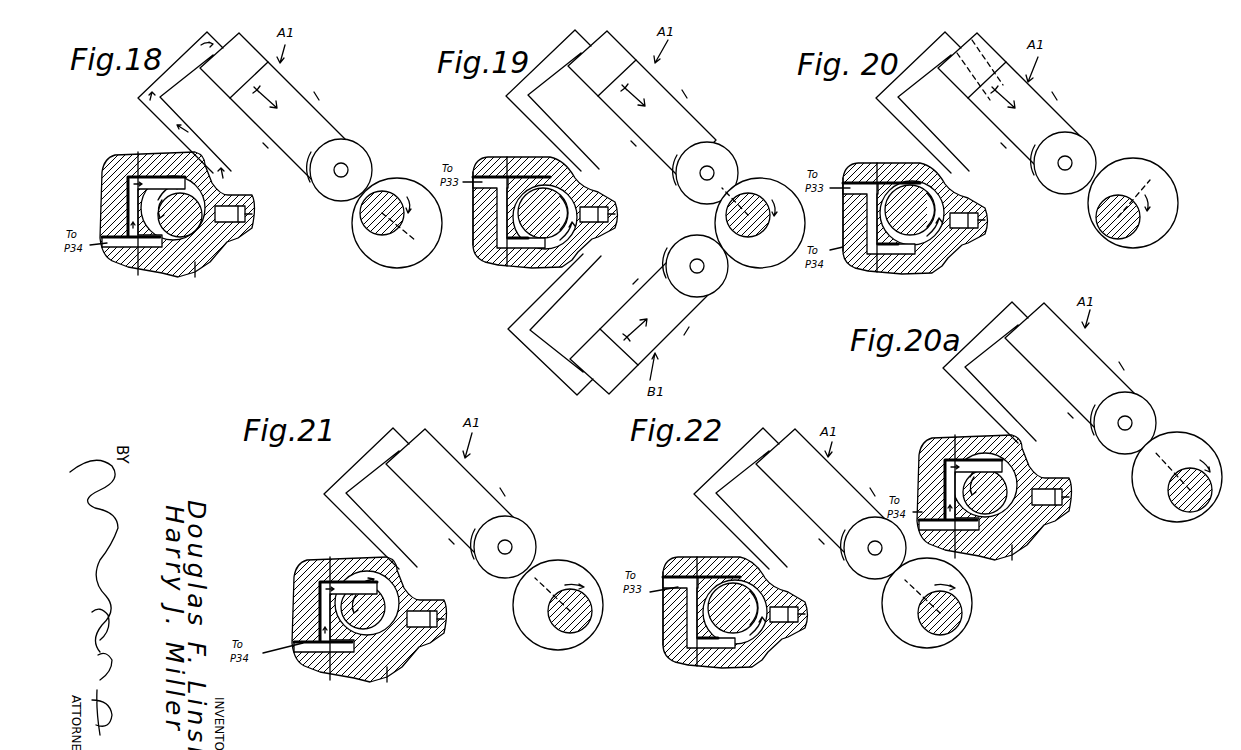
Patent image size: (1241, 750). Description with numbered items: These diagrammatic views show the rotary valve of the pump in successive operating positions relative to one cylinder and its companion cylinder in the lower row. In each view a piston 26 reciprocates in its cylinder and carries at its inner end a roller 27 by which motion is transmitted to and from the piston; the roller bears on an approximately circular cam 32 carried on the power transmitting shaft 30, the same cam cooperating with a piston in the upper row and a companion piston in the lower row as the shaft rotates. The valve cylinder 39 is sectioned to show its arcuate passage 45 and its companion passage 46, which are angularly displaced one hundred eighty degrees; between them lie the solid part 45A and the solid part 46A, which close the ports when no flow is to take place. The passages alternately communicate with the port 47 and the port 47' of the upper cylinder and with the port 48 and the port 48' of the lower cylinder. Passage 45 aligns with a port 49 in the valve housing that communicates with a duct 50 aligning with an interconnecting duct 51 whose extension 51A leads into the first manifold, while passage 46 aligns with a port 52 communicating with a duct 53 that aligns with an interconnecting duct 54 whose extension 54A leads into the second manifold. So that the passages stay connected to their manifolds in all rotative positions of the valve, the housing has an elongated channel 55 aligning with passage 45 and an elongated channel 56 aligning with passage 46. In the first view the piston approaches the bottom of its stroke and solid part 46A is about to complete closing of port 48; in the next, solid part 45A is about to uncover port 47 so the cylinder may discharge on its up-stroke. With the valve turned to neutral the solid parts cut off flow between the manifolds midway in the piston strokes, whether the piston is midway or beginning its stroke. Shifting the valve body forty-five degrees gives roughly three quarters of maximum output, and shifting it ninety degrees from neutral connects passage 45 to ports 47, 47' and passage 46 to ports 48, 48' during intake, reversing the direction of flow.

In FIG. 18, the piston 26 is at (297, 92).
In FIG. 19, the piston 26 is at (693, 310).
In FIG. 20, the piston 26 is at (1023, 97).
In FIG. 20A, the piston 26 is at (1097, 362).
In FIG. 21, the piston 26 is at (460, 485).
In FIG. 22, the piston 26 is at (830, 488).
In FIG. 18, the roller 27 is at (350, 153).
In FIG. 19, the roller 27 is at (715, 280).
In FIG. 20, the roller 27 is at (1083, 157).
In FIG. 20A, the roller 27 is at (1143, 413).
In FIG. 21, the roller 27 is at (520, 545).
In FIG. 22, the roller 27 is at (873, 573).
In FIG. 18, the power transmitting shaft 30 is at (387, 200).
In FIG. 19, the power transmitting shaft 30 is at (753, 197).
In FIG. 20, the power transmitting shaft 30 is at (1120, 200).
In FIG. 20A, the power transmitting shaft 30 is at (1190, 514).
In FIG. 21, the power transmitting shaft 30 is at (570, 632).
In FIG. 22, the power transmitting shaft 30 is at (940, 632).
In FIG. 19, the cam 32 is at (748, 270).
In FIG. 20, the cam 32 is at (1133, 247).
In FIG. 20A, the cam 32 is at (1193, 443).
In FIG. 21, the cam 32 is at (573, 567).
In FIG. 22, the cam 32 is at (947, 577).
In FIG. 18, the valve cylinder 39 is at (173, 237).
In FIG. 19, the valve cylinder 39 is at (520, 218).
In FIG. 20, the valve cylinder 39 is at (893, 203).
In FIG. 20A, the valve cylinder 39 is at (967, 480).
In FIG. 21, the valve cylinder 39 is at (347, 600).
In FIG. 22, the valve cylinder 39 is at (720, 617).
In FIG. 18, the arcuate passage 45 is at (233, 240).
In FIG. 19, the arcuate passage 45 is at (600, 230).
In FIG. 20, the arcuate passage 45 is at (910, 250).
In FIG. 20A, the arcuate passage 45 is at (1008, 540).
In FIG. 21, the arcuate passage 45 is at (293, 573).
In FIG. 22, the arcuate passage 45 is at (760, 643).
In FIG. 19, the solid part 45A is at (523, 177).
In FIG. 20, the solid part 45A is at (890, 167).
In FIG. 22, the solid part 45A is at (717, 637).
In FIG. 18, the companion passage 46 is at (163, 175).
In FIG. 19, the companion passage 46 is at (503, 207).
In FIG. 20, the companion passage 46 is at (900, 183).
In FIG. 20A, the companion passage 46 is at (1027, 475).
In FIG. 21, the companion passage 46 is at (417, 597).
In FIG. 22, the companion passage 46 is at (750, 577).
In FIG. 18, the solid part 46A is at (190, 247).
In FIG. 20, the solid part 46A is at (930, 253).
In FIG. 20A, the solid part 46A is at (973, 492).
In FIG. 21, the solid part 46A is at (357, 610).
In FIG. 19, the port 47 is at (608, 182).
In FIG. 20, the port 47 is at (978, 191).
In FIG. 22, the port 47 is at (800, 584).
In FIG. 19, the port 47' is at (591, 277).
In FIG. 20, the port 47' is at (980, 254).
In FIG. 22, the port 47' is at (798, 659).
In FIG. 18, the port 48 is at (250, 178).
In FIG. 20A, the port 48 is at (1053, 456).
In FIG. 21, the port 48 is at (435, 575).
In FIG. 18, the port 48' is at (248, 266).
In FIG. 20A, the port 48' is at (1056, 542).
In FIG. 21, the port 48' is at (435, 671).
In FIG. 19, the port 49 is at (530, 255).
In FIG. 22, the port 49 is at (727, 673).
In FIG. 19, the duct 50 is at (512, 253).
In FIG. 20, the duct 50 is at (883, 250).
In FIG. 22, the duct 50 is at (707, 670).
In FIG. 19, the interconnecting duct 51 is at (497, 238).
In FIG. 20, the interconnecting duct 51 is at (865, 220).
In FIG. 22, the interconnecting duct 51 is at (687, 607).
In FIG. 19, the extension 51A is at (480, 167).
In FIG. 20, the extension 51A is at (850, 167).
In FIG. 22, the extension 51A is at (672, 562).
In FIG. 18, the port 52 is at (165, 243).
In FIG. 20A, the port 52 is at (977, 447).
In FIG. 21, the port 52 is at (367, 670).
In FIG. 18, the duct 53 is at (148, 253).
In FIG. 20A, the duct 53 is at (975, 540).
In FIG. 21, the duct 53 is at (337, 667).
In FIG. 18, the interconnecting duct 54 is at (130, 193).
In FIG. 20A, the interconnecting duct 54 is at (918, 450).
In FIG. 21, the interconnecting duct 54 is at (320, 603).
In FIG. 18, the extension 54A is at (113, 253).
In FIG. 21, the extension 54A is at (297, 653).
In FIG. 19, the elongated channel 55 is at (600, 213).
In FIG. 20, the elongated channel 55 is at (972, 217).
In FIG. 22, the elongated channel 55 is at (797, 617).
In FIG. 18, the elongated channel 56 is at (233, 217).
In FIG. 20A, the elongated channel 56 is at (1037, 490).
In FIG. 21, the elongated channel 56 is at (427, 617).